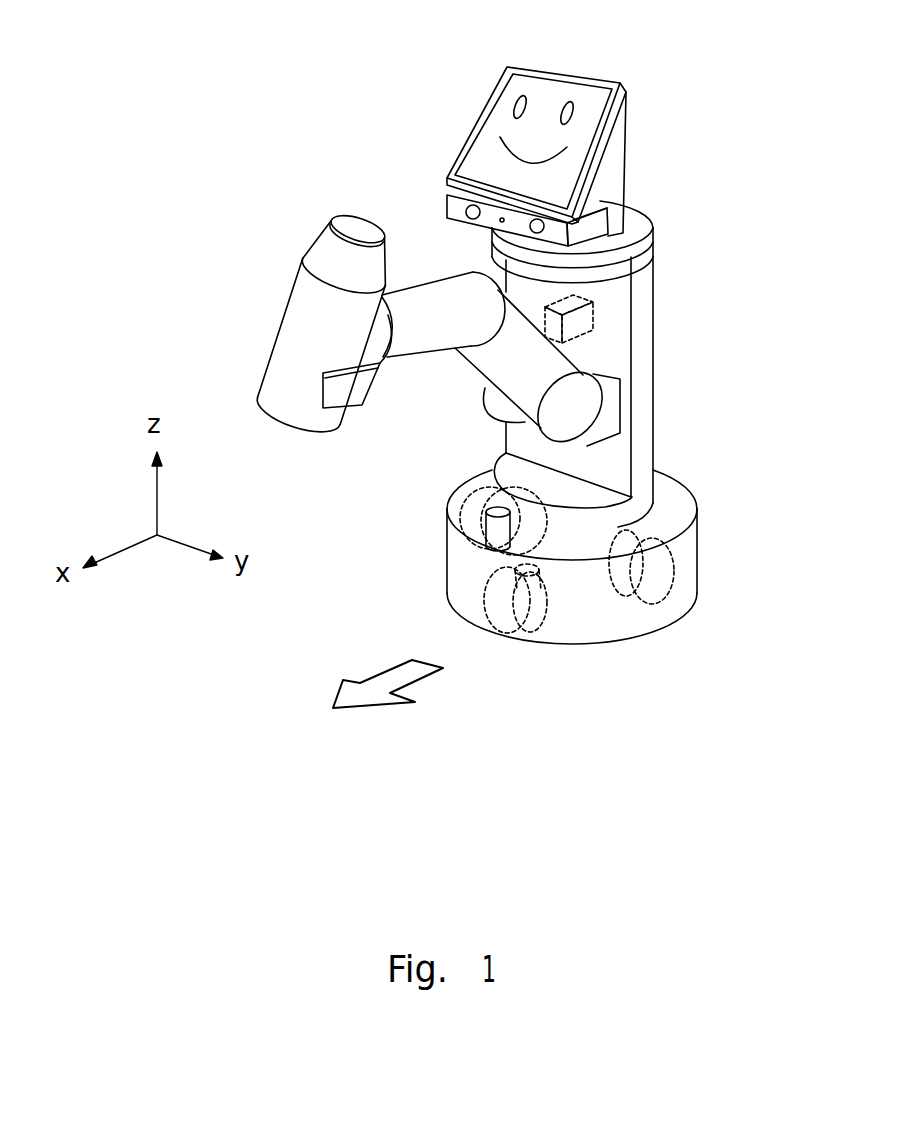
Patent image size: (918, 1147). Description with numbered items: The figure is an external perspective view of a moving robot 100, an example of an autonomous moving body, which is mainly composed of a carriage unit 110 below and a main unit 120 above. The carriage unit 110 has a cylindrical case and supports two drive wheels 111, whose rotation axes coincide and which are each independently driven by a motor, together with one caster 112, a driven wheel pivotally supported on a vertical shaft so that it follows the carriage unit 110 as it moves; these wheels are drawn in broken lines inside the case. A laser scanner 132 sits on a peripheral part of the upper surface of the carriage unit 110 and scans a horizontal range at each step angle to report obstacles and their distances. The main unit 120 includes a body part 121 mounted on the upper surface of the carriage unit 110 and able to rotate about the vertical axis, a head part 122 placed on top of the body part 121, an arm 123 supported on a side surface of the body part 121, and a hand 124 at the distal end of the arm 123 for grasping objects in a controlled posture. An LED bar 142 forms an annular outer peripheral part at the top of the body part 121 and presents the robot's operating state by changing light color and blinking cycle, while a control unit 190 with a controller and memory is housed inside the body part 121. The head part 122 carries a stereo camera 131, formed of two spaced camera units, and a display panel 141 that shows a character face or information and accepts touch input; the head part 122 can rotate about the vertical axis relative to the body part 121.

The moving robot 100 is at (263, 28).
The carriage unit 110 is at (773, 465).
The drive wheel 111 is at (447, 507).
The caster 112 is at (532, 636).
The main unit 120 is at (773, 60).
The body part 121 is at (648, 392).
The head part 122 is at (620, 167).
The arm 123 is at (503, 360).
The hand 124 is at (353, 395).
The stereo camera 131 is at (535, 232).
The laser scanner 132 is at (487, 530).
The display panel 141 is at (505, 88).
The LED bar 142 is at (636, 273).
The control unit 190 is at (597, 330).